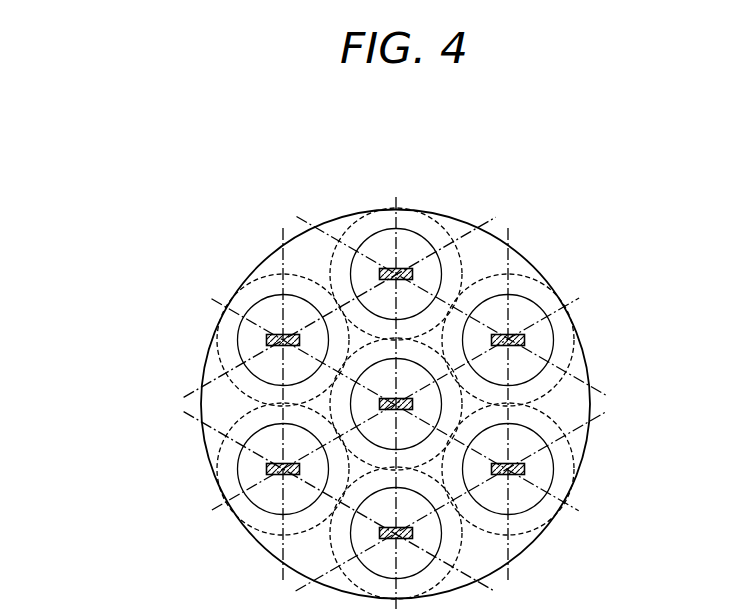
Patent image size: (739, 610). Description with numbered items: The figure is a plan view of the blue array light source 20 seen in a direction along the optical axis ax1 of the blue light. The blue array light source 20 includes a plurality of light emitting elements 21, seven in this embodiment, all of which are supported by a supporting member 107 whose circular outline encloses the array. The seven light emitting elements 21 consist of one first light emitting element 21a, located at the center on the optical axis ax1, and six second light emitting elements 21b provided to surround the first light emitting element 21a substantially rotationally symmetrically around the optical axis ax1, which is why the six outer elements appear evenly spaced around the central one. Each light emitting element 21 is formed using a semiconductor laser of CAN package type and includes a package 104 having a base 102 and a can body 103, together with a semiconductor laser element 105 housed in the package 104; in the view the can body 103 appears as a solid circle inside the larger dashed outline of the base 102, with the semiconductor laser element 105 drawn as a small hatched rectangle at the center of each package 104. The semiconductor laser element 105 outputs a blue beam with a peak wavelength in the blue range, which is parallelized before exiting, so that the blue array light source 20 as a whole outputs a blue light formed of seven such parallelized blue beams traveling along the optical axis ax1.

The blue array light source 20 is at (345, 362).
The light emitting element 21 is at (318, 375).
The first light emitting element 21a is at (422, 355).
The second light emitting element 21b is at (309, 375).
The base 102 is at (220, 343).
The can body 103 is at (252, 337).
The package 104 is at (197, 340).
The semiconductor laser element 105 is at (280, 337).
The supporting member 107 is at (213, 443).
The optical axis ax1 is at (396, 404).